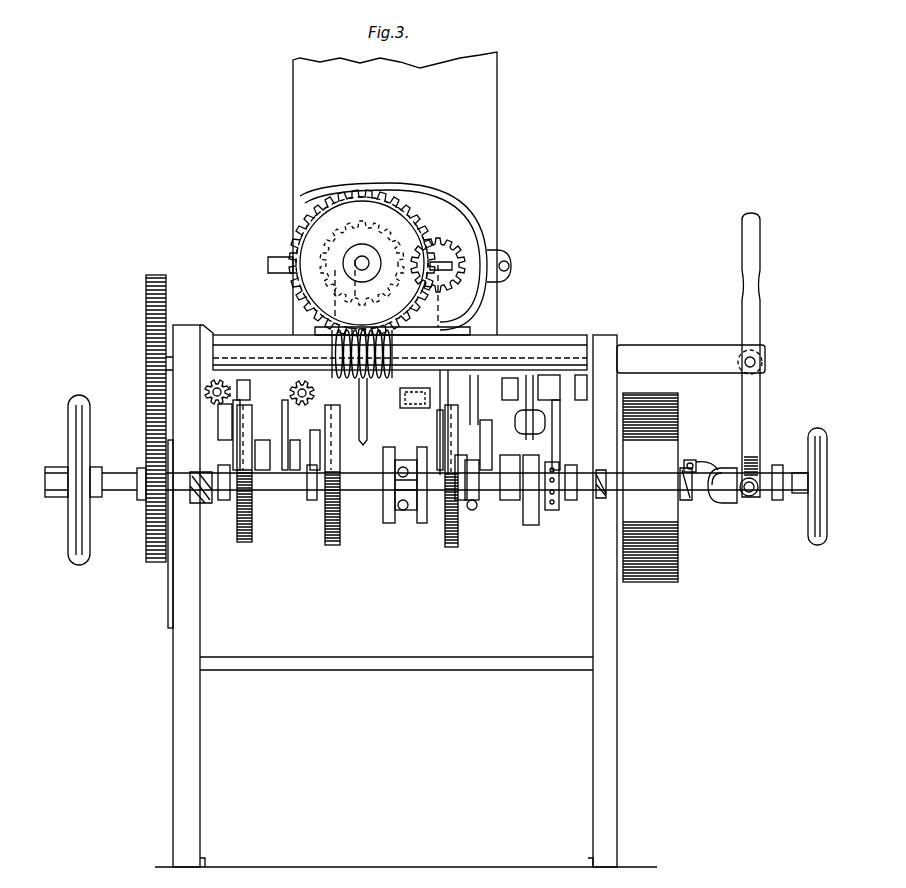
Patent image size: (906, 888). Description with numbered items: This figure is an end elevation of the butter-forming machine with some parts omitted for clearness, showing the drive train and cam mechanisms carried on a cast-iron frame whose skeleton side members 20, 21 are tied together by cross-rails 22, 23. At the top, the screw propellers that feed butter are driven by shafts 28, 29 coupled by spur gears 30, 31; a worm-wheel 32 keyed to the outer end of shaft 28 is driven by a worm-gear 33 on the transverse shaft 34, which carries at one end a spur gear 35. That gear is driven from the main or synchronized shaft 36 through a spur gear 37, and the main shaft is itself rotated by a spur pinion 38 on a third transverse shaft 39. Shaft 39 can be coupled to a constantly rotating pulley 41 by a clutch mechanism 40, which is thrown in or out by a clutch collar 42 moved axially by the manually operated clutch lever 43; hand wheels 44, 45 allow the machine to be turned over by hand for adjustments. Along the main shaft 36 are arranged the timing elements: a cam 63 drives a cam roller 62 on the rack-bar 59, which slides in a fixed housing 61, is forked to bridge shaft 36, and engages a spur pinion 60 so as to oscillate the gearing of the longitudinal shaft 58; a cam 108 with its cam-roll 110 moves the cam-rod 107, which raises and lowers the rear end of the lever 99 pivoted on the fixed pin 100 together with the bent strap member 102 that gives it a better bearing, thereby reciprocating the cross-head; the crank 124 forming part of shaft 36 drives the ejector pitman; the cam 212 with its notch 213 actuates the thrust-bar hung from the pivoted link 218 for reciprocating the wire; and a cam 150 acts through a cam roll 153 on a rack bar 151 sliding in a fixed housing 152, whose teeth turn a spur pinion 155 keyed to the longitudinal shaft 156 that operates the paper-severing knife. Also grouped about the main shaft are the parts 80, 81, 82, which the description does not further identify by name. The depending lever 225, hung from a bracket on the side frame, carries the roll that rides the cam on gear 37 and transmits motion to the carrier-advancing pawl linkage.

The skeleton side member 20 is at (190, 607).
The skeleton side member 21 is at (612, 618).
The cross-rail 22 is at (520, 347).
The cross-rail 23 is at (432, 668).
The shaft 28 is at (355, 262).
The shaft 29 is at (487, 280).
The spur gear 30 is at (320, 278).
The spur gear 31 is at (455, 250).
The worm-wheel 32 is at (300, 213).
The worm-gear 33 is at (378, 378).
The transverse shaft 34 is at (550, 352).
The spur gear 35 is at (146, 294).
The main shaft 36 is at (283, 492).
The spur gear 37 is at (146, 432).
The spur pinion 38 is at (137, 500).
The third transverse shaft 39 is at (212, 500).
The clutch mechanism 40 is at (693, 458).
The pulley 41 is at (680, 540).
The clutch collar 42 is at (770, 500).
The clutch lever 43 is at (762, 432).
The hand wheel 44 is at (78, 566).
The hand wheel 45 is at (810, 542).
The longitudinal shaft 58 is at (268, 442).
The rack-bar 59 is at (294, 440).
The spur pinion 60 is at (290, 396).
The fixed housing 61 is at (358, 420).
The cam roller 62 is at (316, 445).
The cam 63 is at (332, 545).
The link 80 is at (545, 430).
The rod 81 is at (548, 461).
The plate 82 is at (550, 512).
The lever 99 is at (441, 388).
The pin 100 is at (447, 400).
The bent strap member 102 is at (416, 408).
The cam-rod 107 is at (437, 445).
The cam 108 is at (450, 547).
The cam-roll 110 is at (485, 452).
The crank 124 is at (400, 546).
The cam 150 is at (244, 542).
The rack bar 151 is at (232, 438).
The fixed housing 152 is at (250, 386).
The cam roll 153 is at (296, 416).
The spur pinion 155 is at (233, 422).
The longitudinal shaft 156 is at (222, 380).
The cam 212 is at (530, 525).
The notch 213 is at (500, 500).
The pivoted link 218 is at (468, 466).
The depending lever 225 is at (175, 595).